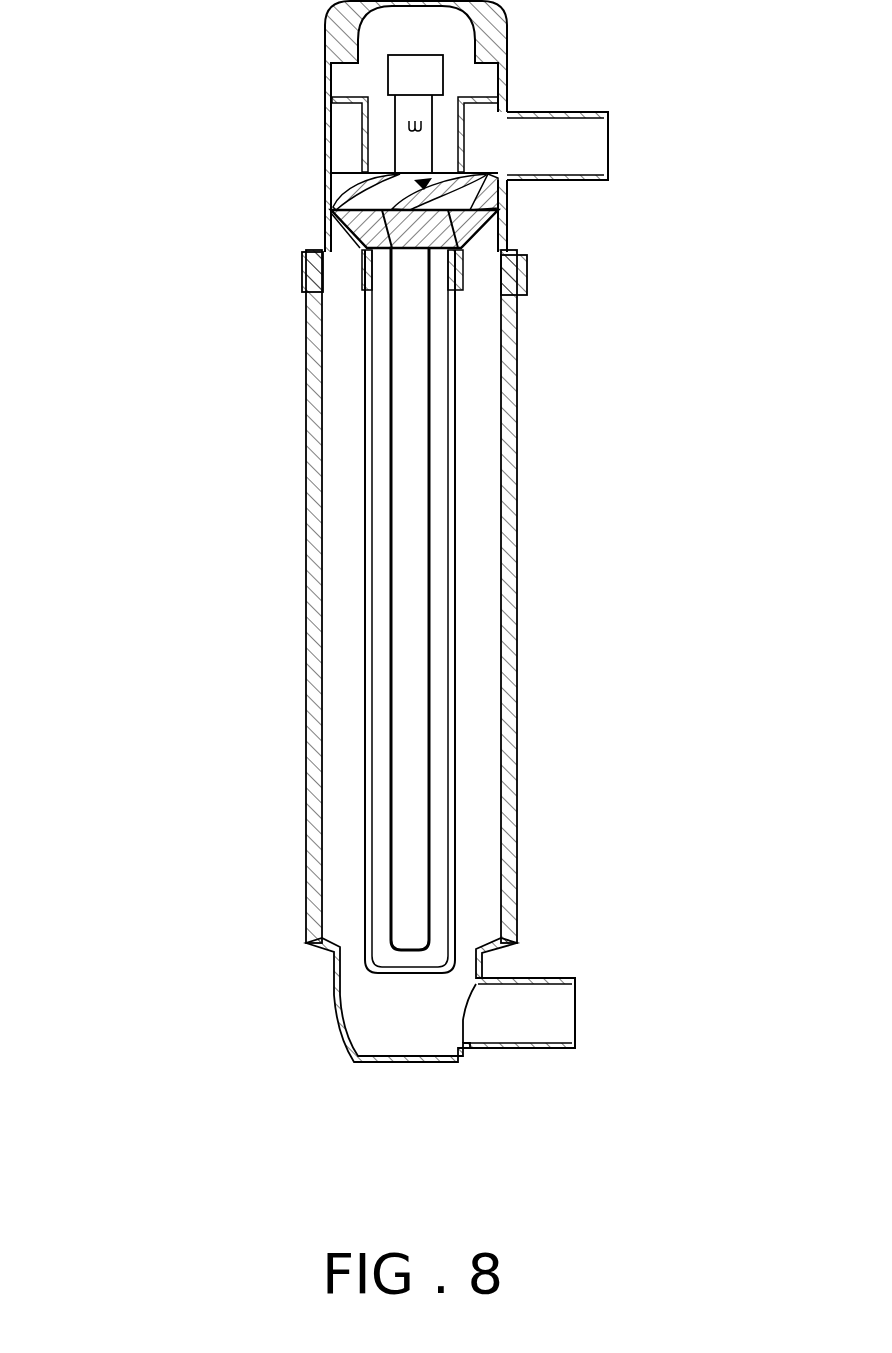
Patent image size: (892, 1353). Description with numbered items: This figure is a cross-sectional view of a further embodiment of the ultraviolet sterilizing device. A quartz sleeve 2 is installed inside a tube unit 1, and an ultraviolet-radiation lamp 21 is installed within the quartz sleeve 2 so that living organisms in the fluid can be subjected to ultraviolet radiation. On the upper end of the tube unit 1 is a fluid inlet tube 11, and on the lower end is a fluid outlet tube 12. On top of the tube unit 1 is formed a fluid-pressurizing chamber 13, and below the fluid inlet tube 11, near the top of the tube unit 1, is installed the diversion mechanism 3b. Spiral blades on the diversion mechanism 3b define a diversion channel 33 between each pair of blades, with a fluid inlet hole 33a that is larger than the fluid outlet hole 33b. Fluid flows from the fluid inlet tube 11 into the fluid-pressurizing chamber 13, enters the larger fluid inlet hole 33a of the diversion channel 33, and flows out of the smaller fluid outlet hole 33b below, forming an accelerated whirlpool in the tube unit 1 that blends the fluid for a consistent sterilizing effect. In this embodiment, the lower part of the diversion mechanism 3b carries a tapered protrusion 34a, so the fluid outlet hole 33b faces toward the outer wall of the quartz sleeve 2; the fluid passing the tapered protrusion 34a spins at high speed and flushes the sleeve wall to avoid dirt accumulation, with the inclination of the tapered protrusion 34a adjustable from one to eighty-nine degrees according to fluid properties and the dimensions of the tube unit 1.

The tube unit 1 is at (310, 592).
The fluid inlet tube 11 is at (578, 154).
The fluid outlet tube 12 is at (577, 1007).
The fluid-pressurizing chamber 13 is at (350, 131).
The quartz sleeve 2 is at (368, 458).
The ultraviolet-radiation lamp 21 is at (415, 440).
The diversion mechanism 3b is at (326, 202).
The diversion channel 33 is at (326, 197).
The fluid inlet hole 33a is at (481, 161).
The fluid outlet hole 33b is at (389, 258).
The tapered protrusion 34a is at (326, 232).